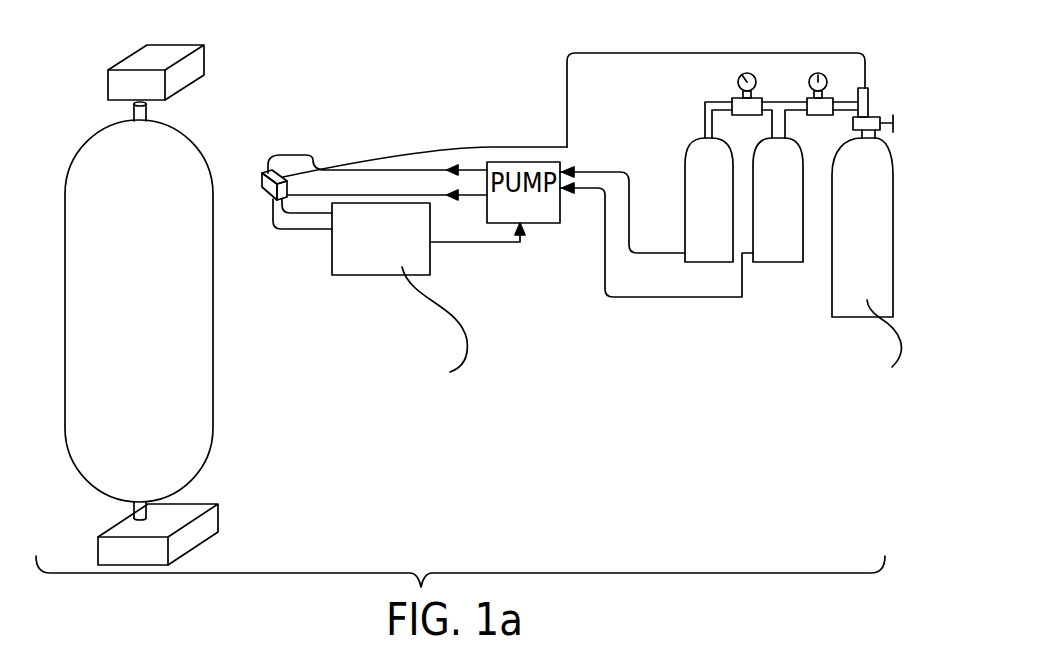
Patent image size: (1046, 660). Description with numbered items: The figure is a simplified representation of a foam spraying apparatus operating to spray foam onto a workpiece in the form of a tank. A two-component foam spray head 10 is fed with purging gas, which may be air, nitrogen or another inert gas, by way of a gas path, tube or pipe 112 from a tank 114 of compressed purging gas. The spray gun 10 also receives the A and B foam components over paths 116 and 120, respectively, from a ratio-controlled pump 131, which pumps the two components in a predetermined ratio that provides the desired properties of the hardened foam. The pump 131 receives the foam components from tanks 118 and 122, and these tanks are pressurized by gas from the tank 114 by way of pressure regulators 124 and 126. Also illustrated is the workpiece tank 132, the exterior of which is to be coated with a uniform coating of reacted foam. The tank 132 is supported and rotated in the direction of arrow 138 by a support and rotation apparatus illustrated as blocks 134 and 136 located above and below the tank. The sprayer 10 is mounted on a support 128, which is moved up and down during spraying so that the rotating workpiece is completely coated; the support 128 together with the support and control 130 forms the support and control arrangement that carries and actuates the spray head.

The two-component foam spray head 10 is at (267, 192).
The gas path, tube or pipe 112 is at (484, 147).
The tank of compressed purging gas 114 is at (838, 298).
The path for A foam component 116 is at (470, 242).
The tank of A foam component 118 is at (777, 263).
The path for B foam component 120 is at (410, 170).
The tank of B foam component 122 is at (685, 152).
The pressure regulator 124 is at (807, 100).
The pressure regulator 126 is at (733, 100).
The support 128 is at (317, 233).
The support and control 130 is at (367, 275).
The ratio-controlled pump 131 is at (535, 223).
The tank 132 is at (80, 342).
The support and rotation apparatus block 134 is at (218, 505).
The support and rotation apparatus block 136 is at (198, 63).
The arrow 138 is at (178, 188).